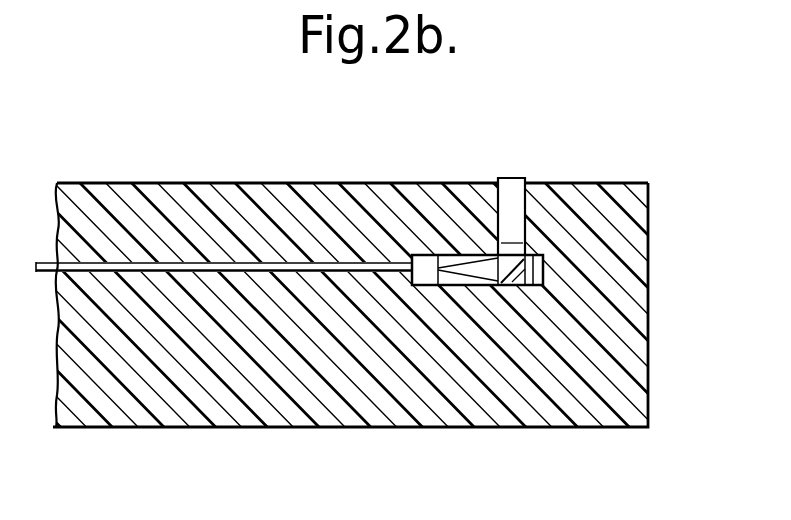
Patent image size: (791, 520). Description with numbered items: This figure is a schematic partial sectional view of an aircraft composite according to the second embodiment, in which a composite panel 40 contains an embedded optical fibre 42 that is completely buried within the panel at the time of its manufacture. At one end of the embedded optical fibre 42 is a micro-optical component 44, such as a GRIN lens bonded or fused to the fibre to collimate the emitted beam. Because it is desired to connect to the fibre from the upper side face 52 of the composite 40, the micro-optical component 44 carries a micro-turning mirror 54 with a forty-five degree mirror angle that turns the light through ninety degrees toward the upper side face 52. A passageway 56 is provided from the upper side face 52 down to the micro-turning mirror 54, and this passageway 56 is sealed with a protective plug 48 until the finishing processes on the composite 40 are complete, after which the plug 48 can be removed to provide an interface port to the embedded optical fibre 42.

The composite panel 40 is at (338, 405).
The embedded optical fibre 42 is at (207, 265).
The micro-optical component 44 is at (445, 262).
The protective plug 48 is at (508, 183).
The upper side face 52 is at (367, 182).
The micro-turning mirror 54 is at (527, 268).
The passageway 56 is at (518, 247).